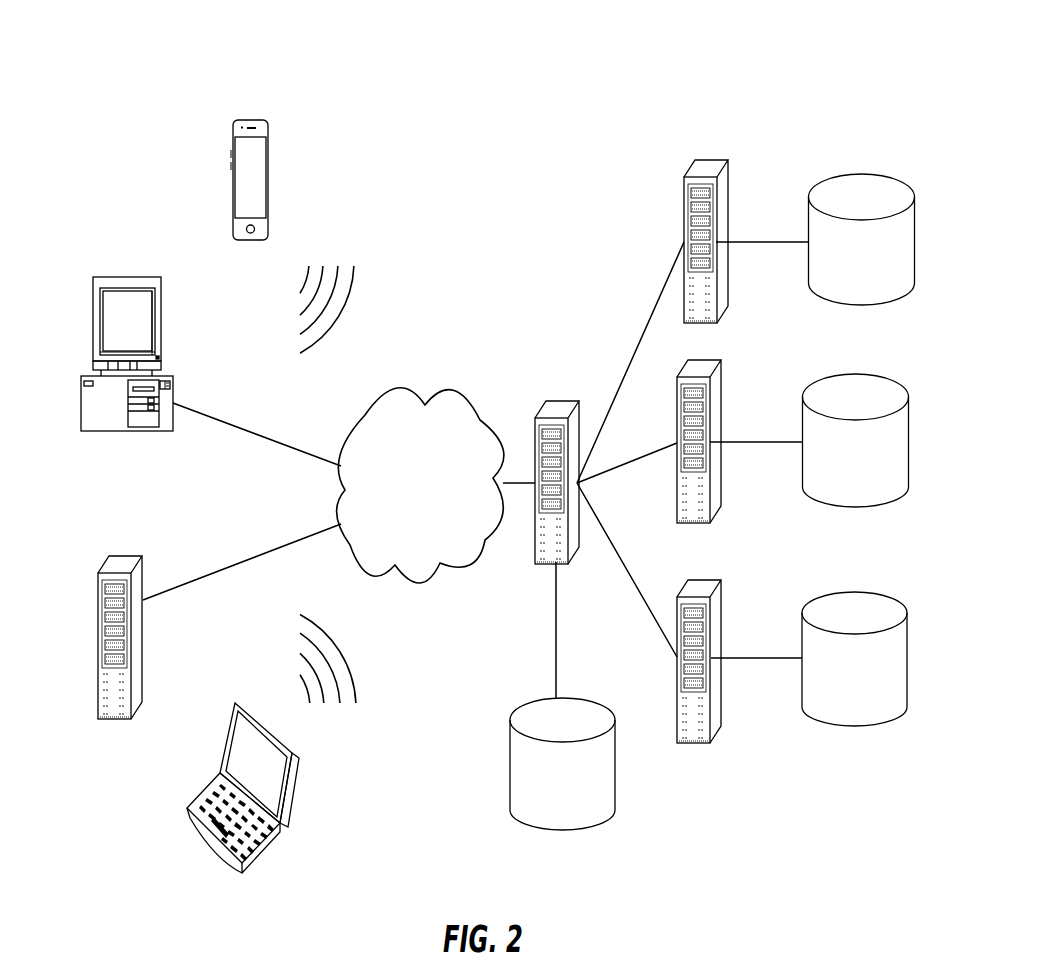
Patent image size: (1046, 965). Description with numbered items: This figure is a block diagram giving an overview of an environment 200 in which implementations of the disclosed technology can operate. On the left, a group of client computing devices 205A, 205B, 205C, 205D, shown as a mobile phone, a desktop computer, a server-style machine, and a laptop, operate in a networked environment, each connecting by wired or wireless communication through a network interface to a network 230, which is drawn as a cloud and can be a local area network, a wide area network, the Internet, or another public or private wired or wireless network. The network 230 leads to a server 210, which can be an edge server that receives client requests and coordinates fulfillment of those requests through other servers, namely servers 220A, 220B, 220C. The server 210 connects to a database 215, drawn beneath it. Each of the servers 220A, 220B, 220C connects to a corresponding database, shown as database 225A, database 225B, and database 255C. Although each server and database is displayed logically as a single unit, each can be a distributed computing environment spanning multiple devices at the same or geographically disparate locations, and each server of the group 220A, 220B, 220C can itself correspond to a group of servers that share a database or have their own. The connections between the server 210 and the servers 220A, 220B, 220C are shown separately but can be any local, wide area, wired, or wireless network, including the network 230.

The environment 200 is at (577, 120).
The client computing device 205A is at (260, 120).
The client computing device 205B is at (157, 277).
The client computing device 205C is at (135, 553).
The client computing device 205D is at (288, 790).
The server 210 is at (565, 397).
The database 215 is at (600, 700).
The server 220A is at (727, 160).
The server 220B is at (721, 360).
The server 220C is at (722, 578).
The database 225A is at (860, 172).
The database 225B is at (856, 373).
The database 255C is at (855, 592).
The network 230 is at (460, 390).